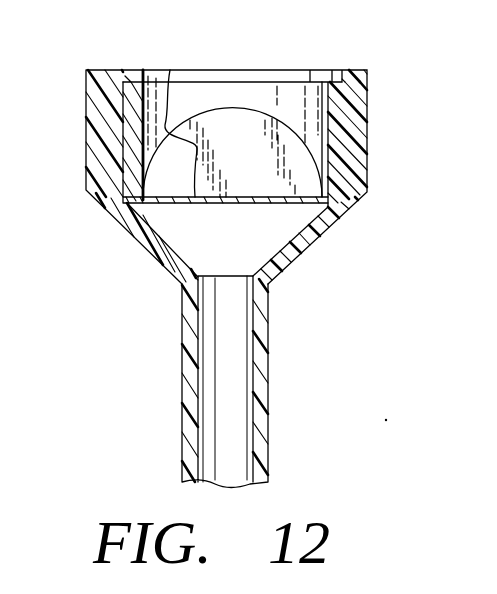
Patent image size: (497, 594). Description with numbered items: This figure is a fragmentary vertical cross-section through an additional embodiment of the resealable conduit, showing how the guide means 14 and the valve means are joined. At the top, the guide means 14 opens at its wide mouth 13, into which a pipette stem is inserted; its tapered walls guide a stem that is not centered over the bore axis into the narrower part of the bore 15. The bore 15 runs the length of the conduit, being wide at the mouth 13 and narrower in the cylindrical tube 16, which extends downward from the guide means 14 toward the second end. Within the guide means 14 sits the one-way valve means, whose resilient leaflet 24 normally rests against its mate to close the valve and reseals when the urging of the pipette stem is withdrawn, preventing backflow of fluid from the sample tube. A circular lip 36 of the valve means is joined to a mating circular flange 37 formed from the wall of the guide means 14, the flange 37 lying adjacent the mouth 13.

The mouth 13 is at (225, 67).
The guide means 14 is at (86, 155).
The bore 15 is at (238, 348).
The cylindrical tube 16 is at (182, 305).
The leaflet 24 is at (260, 161).
The circular lip 36 is at (118, 68).
The circular flange 37 is at (112, 92).